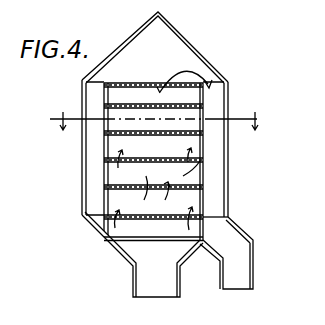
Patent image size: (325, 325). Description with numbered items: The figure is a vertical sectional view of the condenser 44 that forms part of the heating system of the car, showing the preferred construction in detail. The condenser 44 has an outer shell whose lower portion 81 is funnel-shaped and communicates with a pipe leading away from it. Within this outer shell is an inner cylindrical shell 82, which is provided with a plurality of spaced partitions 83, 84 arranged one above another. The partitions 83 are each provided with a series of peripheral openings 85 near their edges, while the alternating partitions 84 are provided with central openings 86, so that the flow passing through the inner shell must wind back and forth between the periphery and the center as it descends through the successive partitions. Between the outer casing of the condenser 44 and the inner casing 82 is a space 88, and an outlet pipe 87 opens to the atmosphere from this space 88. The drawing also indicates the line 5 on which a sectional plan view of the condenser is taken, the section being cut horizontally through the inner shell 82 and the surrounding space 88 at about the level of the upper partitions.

The condenser 44 is at (228, 98).
The lower portion of the outer shell 81 is at (112, 245).
The inner cylindrical shell 82 is at (105, 148).
The partitions 83 is at (155, 186).
The partitions 84 is at (133, 83).
The peripheral openings 85 is at (117, 103).
The central openings 86 is at (172, 75).
The outlet pipe 87 is at (243, 262).
The space 88 is at (95, 132).
The section line 5— 5 is at (159, 121).